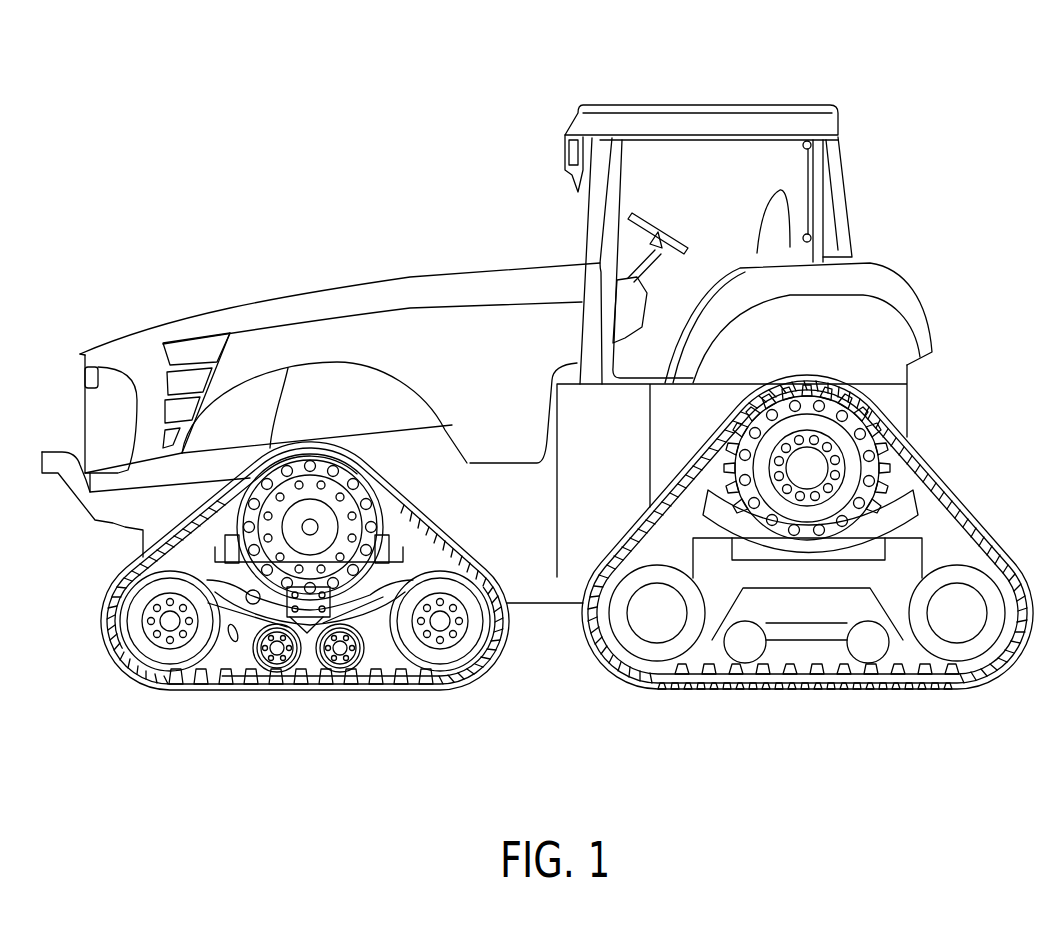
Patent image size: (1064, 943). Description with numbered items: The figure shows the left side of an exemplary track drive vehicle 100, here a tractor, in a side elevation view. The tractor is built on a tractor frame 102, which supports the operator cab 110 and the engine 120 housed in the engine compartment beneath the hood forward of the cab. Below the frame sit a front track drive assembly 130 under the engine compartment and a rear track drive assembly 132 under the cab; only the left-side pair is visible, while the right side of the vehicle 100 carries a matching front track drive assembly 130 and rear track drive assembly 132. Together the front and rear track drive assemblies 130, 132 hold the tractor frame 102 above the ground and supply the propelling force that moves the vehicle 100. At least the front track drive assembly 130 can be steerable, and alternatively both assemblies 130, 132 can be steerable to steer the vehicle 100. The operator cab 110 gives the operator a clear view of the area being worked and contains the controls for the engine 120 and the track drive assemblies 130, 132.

The track drive vehicle 100 is at (212, 116).
The tractor frame 102 is at (437, 450).
The operator cab 110 is at (722, 103).
The engine 120 is at (365, 300).
The front track drive assembly 130 is at (120, 703).
The rear track drive assembly 132 is at (836, 715).